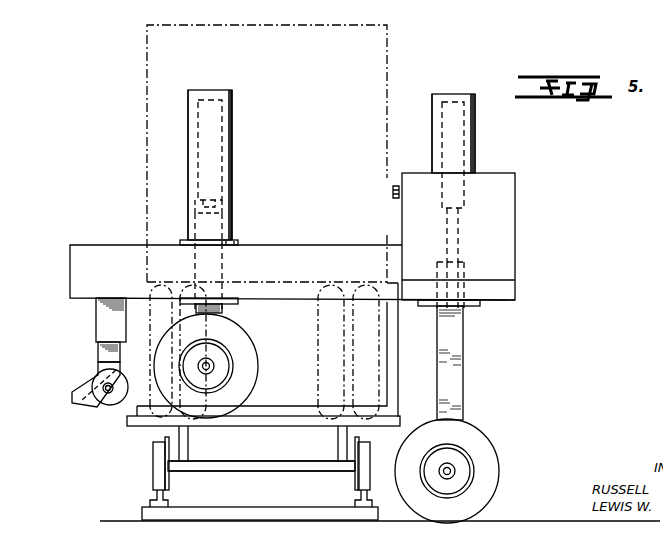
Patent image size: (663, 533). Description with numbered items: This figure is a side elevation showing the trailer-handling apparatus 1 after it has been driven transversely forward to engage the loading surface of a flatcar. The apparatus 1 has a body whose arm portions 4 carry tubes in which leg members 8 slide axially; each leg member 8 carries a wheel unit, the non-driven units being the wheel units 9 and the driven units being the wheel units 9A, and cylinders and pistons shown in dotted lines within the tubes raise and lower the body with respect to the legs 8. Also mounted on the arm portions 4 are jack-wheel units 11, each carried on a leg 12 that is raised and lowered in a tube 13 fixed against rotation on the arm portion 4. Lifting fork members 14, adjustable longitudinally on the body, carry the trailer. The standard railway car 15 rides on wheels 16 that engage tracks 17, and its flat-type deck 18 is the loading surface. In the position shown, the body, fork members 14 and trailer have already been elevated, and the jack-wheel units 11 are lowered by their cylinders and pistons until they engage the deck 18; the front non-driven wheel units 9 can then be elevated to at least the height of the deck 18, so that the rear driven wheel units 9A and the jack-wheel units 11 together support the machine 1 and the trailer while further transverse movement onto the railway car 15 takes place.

The apparatus 1 is at (505, 236).
The arm portion 4 is at (75, 266).
The leg member 8 is at (462, 379).
The wheel unit structure 9 is at (244, 351).
The driven wheel unit 9A is at (486, 452).
The jack-wheel unit 11 is at (114, 373).
The leg 12 is at (110, 363).
The tube 13 is at (102, 321).
The lifting fork member 14 is at (282, 412).
The railway car 15 is at (310, 470).
The wheels 16 is at (366, 470).
The tracks 17 is at (369, 493).
The deck 18 is at (240, 461).